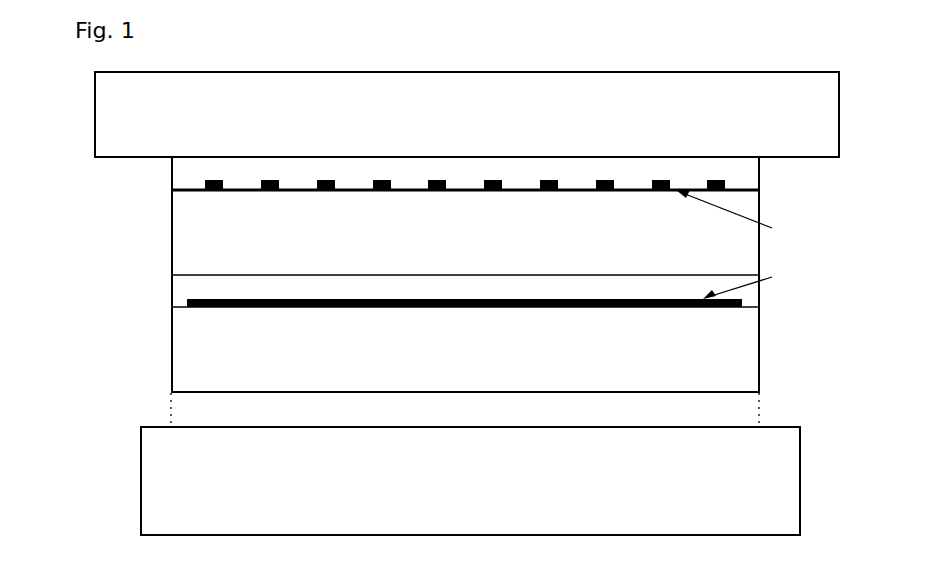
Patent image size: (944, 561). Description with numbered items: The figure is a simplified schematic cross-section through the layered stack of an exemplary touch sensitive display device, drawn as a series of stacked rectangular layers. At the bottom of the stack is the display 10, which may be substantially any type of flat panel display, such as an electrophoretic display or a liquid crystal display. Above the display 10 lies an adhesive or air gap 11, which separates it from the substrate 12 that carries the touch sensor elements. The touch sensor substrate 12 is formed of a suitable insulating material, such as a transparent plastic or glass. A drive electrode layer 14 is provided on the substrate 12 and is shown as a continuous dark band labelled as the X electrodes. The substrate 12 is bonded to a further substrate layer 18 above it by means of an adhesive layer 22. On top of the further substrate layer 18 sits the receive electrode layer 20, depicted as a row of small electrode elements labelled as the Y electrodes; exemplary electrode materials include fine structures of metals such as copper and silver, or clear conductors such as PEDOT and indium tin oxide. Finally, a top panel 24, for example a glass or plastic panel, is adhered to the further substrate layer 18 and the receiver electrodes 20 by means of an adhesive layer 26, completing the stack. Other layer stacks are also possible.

The display 10 is at (141, 474).
The adhesive or air gap 11 is at (168, 406).
The substrate 12 is at (172, 339).
The drive electrode layer 14 is at (187, 303).
The substrate layer 18 is at (172, 235).
The receive electrode layer 20 is at (172, 186).
The adhesive layer 22 is at (172, 283).
The top panel 24 is at (95, 103).
The adhesive layer 26 is at (172, 170).